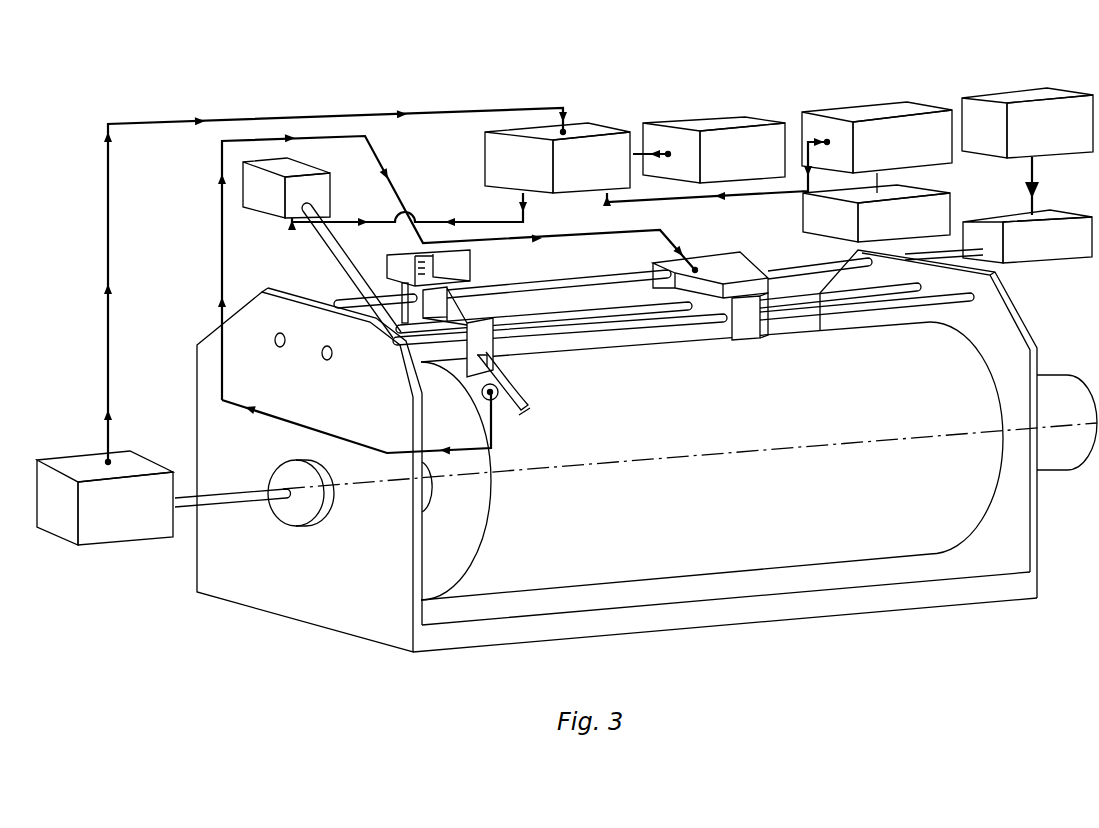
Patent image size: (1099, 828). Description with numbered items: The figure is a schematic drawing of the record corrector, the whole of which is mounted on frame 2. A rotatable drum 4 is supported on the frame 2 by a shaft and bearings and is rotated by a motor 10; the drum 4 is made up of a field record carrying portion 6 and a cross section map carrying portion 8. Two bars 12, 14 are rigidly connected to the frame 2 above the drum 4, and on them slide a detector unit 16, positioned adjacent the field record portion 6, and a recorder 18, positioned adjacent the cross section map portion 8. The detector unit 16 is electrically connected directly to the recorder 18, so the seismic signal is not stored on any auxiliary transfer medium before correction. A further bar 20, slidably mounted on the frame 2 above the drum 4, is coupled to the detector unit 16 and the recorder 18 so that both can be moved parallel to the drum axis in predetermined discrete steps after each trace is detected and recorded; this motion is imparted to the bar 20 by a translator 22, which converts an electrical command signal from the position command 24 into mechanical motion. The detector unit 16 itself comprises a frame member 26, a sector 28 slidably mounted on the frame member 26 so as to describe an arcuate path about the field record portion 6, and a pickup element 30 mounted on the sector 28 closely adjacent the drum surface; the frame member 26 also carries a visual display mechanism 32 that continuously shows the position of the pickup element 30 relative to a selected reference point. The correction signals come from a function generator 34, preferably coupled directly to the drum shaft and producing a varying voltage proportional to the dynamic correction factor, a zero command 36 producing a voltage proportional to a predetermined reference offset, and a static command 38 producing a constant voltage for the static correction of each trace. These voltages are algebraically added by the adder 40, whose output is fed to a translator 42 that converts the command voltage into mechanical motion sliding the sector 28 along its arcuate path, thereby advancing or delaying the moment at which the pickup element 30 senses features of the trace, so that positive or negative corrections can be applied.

The frame 2 is at (1003, 318).
The rotatable drum 4 is at (447, 544).
The field record carrying portion 6 is at (528, 582).
The cross section map carrying portion 8 is at (677, 572).
The motor 10 is at (1043, 385).
The bar 12 is at (623, 308).
The bar 14 is at (640, 328).
The detector unit 16 is at (435, 302).
The recorder 18 is at (717, 273).
The bar 20 is at (775, 265).
The translator 22 is at (1020, 218).
The position command 24 is at (1027, 98).
The frame member 26 is at (467, 323).
The sector 28 is at (507, 397).
The pickup element 30 is at (484, 393).
The visual display mechanism 32 is at (457, 272).
The function generator 34 is at (123, 460).
The zero command 36 is at (718, 120).
The static command 38 is at (878, 110).
The adder 40 is at (505, 157).
The translator 42 is at (296, 168).